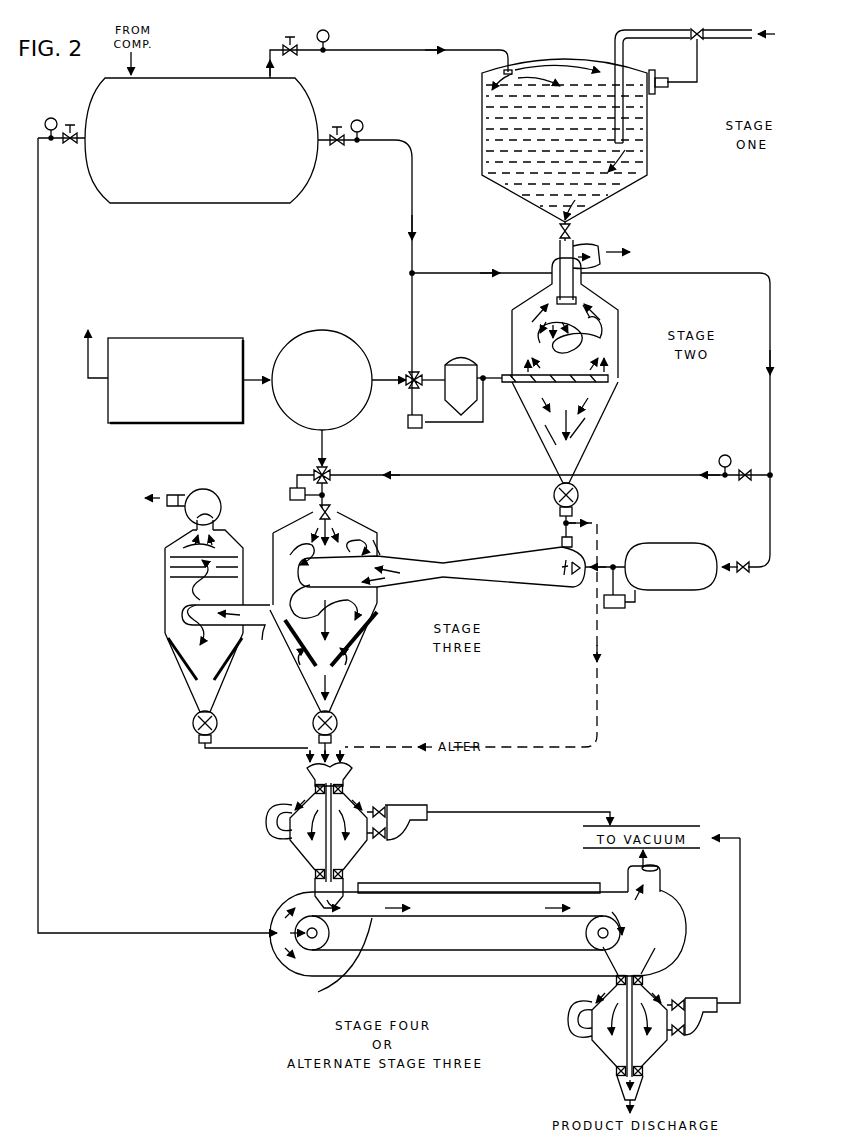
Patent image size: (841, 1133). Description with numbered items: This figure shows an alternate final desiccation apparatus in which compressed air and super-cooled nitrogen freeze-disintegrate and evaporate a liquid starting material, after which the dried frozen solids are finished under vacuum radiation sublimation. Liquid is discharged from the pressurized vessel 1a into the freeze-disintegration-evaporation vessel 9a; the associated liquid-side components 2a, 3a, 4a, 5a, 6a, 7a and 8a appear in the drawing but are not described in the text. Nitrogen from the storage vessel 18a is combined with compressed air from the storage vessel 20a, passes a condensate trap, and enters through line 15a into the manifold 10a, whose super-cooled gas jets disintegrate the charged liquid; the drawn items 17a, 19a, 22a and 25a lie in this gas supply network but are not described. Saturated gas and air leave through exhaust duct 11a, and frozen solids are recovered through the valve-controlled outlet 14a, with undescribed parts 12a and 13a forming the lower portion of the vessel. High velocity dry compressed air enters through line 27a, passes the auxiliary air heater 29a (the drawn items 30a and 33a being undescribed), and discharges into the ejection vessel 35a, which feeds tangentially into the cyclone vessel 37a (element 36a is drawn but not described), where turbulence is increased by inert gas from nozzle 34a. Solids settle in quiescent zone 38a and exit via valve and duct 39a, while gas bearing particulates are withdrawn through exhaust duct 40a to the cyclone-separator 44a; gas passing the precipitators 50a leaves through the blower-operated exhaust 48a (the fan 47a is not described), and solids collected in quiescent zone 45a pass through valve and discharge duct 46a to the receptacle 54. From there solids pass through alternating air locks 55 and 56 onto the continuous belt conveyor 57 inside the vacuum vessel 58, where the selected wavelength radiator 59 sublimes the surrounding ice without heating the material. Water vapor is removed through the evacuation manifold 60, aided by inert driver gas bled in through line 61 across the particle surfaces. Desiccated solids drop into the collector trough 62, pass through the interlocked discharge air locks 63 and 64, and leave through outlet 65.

The pressurized vessel 1a is at (647, 150).
The liquid inlet valve 2a is at (702, 40).
The liquid inlet pipe 3a is at (640, 40).
The float level control 4a is at (668, 86).
The compressed air line 5a is at (405, 50).
The tank outlet valve 6a is at (572, 233).
The liquid feed pipe 7a is at (558, 262).
The spray nozzle 8a is at (584, 312).
The freeze-disintegration-evaporation vessel 9a is at (620, 322).
The manifold 10a is at (610, 379).
The exhaust duct 11a is at (596, 248).
The conical hopper wall 12a is at (590, 442).
The conical hopper wall 13a is at (580, 458).
The valve-controlled outlet 14a is at (580, 498).
The line 15a is at (490, 375).
The control valve 17a is at (408, 392).
The storage vessel 18a is at (357, 344).
The blower unit 19a is at (194, 338).
The storage vessel 20a is at (297, 196).
The filter 22a is at (458, 356).
The air line 25a is at (414, 247).
The line 27a is at (768, 412).
The auxiliary air heater 29a is at (668, 590).
The control unit 30a is at (616, 610).
The valve and gauge 33a is at (742, 481).
The nozzle 34a is at (338, 516).
The ejection vessel 35a is at (512, 557).
The stage three chamber 36a is at (443, 562).
The cyclone vessel 37a is at (383, 548).
The quiescent zone 38a is at (312, 674).
The valve and duct 39a is at (338, 722).
The exhaust duct 40a is at (262, 630).
The cyclone-separator 44a is at (165, 616).
The quiescent zone 45a is at (195, 692).
The valve and discharge duct 46a is at (220, 724).
The exhaust fan 47a is at (208, 505).
The blower-operated exhaust 48a is at (190, 493).
The precipitators 50a is at (170, 578).
The receptacle 54 is at (347, 773).
The air lock 55 is at (362, 848).
The air lock 56 is at (290, 848).
The continuous belt conveyor 57 is at (455, 951).
The vacuum vessel 58 is at (425, 978).
The selected wavelength radiator 59 is at (505, 884).
The evacuation manifold 60 is at (626, 876).
The line 61 is at (42, 762).
The collector trough 62 is at (655, 944).
The discharge air lock 63 is at (598, 1040).
The discharge air lock 64 is at (668, 1046).
The outlet 65 is at (646, 1090).